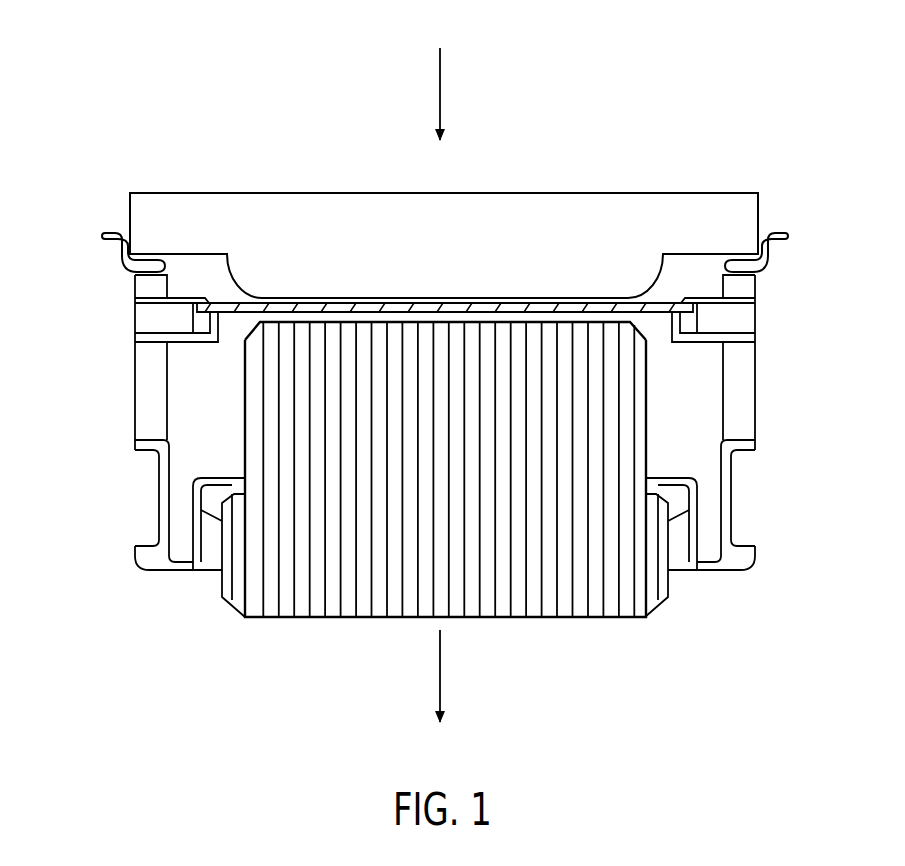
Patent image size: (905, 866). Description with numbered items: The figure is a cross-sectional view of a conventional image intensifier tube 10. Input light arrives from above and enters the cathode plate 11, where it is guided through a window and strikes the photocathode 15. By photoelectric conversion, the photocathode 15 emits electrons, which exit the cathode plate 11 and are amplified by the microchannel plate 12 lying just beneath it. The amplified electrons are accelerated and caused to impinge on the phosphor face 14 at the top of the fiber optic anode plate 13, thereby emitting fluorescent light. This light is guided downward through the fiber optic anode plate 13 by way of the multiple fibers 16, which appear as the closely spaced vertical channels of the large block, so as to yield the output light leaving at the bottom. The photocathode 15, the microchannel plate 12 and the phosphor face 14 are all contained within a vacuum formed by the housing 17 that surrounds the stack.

The image intensifier tube 10 is at (697, 101).
The cathode plate 11 is at (122, 210).
The microchannel plate 12 is at (216, 297).
The fiber optic anode plate 13 is at (235, 449).
The phosphor face 14 is at (263, 324).
The photocathode 15 is at (495, 296).
The fibers 16 is at (515, 609).
The housing 17 is at (765, 309).